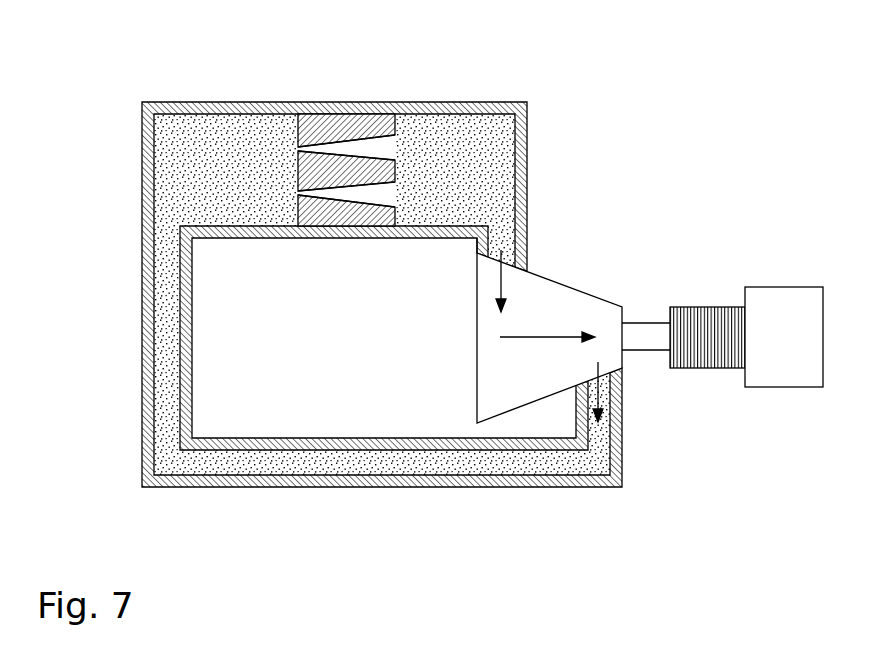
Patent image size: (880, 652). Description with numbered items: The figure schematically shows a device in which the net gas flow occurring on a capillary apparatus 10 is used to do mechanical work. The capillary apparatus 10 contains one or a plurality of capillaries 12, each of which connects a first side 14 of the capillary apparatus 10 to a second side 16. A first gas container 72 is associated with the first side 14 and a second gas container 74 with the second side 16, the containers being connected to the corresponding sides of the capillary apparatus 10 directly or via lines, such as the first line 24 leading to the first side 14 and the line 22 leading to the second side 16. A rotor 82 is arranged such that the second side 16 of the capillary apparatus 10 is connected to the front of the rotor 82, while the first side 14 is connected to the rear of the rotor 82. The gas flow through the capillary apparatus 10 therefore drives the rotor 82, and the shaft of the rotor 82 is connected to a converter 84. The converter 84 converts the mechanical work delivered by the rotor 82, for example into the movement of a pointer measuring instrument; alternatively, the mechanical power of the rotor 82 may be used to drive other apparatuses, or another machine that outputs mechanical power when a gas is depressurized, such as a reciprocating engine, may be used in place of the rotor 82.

The capillary apparatus 10 is at (355, 127).
The capillary 12 is at (357, 193).
The first side 14 is at (297, 173).
The second side 16 is at (397, 170).
The line 22 is at (503, 237).
The first line 24 is at (165, 338).
The first gas container 72 is at (165, 152).
The second gas container 74 is at (473, 152).
The rotor 82 is at (489, 383).
The converter 84 is at (787, 375).